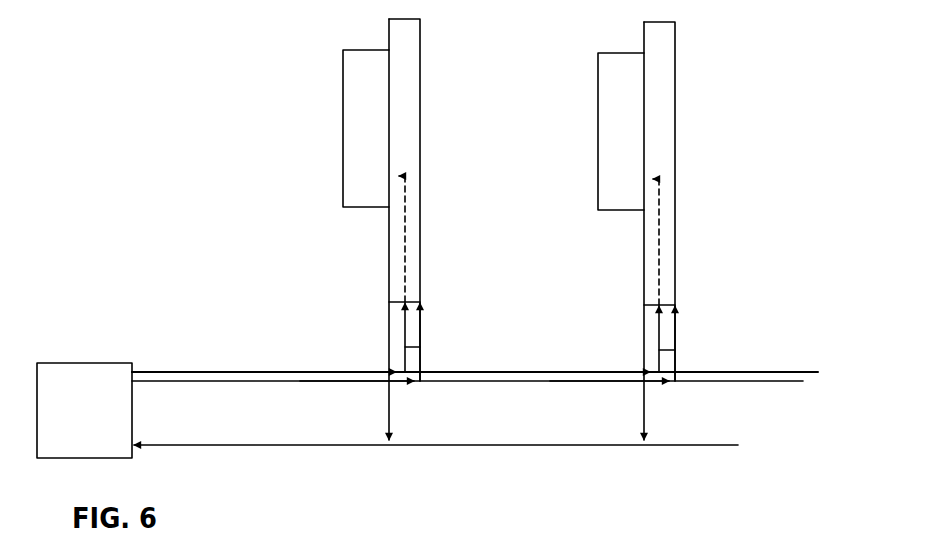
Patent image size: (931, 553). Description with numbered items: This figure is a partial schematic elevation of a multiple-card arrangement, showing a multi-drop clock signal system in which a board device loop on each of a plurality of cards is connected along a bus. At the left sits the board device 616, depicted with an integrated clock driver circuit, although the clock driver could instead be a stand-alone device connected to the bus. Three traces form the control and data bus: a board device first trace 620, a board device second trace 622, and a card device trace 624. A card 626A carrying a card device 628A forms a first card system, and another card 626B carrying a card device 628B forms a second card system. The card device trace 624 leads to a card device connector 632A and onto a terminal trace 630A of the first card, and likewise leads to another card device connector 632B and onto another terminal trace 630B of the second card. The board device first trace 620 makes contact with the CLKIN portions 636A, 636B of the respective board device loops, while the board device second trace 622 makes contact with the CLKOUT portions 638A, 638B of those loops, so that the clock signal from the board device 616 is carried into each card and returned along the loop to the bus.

The board device 616 is at (117, 378).
The board device first trace 620 is at (218, 380).
The board device second trace 622 is at (268, 443).
The card device trace 624 is at (182, 371).
The card 626A is at (405, 144).
The card 626B is at (660, 146).
The card device 628A is at (358, 120).
The card device 628B is at (612, 122).
The terminal trace 630A is at (405, 268).
The terminal trace 630B is at (659, 270).
The card device connector 632A is at (405, 347).
The card device connector 632B is at (659, 350).
The CLKIN portion 636A is at (421, 323).
The CLKIN portion 636B is at (676, 325).
The CLKOUT portion 638A is at (388, 340).
The CLKOUT portion 638B is at (642, 342).